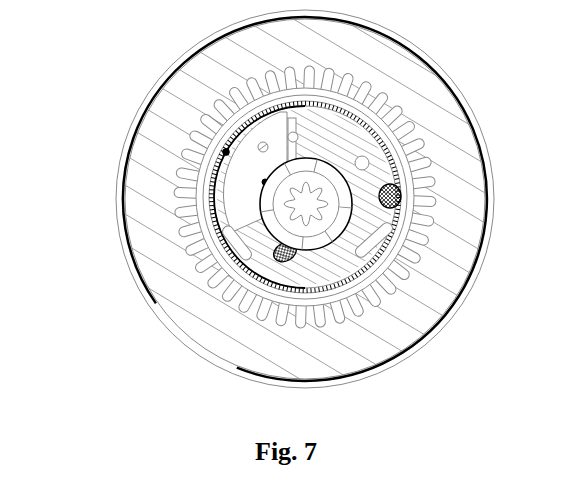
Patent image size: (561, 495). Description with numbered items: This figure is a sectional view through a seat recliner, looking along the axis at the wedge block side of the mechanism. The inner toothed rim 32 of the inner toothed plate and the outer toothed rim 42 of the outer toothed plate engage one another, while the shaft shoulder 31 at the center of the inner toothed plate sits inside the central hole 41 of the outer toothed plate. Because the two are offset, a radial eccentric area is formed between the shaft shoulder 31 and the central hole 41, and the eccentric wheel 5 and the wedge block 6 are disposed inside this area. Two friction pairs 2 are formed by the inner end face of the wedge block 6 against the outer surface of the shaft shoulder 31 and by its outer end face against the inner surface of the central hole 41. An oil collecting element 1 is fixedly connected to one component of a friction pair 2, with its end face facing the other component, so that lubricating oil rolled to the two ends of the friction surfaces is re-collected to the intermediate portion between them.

The oil collecting element 1 is at (394, 275).
The friction pair 2 is at (238, 175).
The eccentric wheel 5 is at (246, 216).
The wedge block 6 is at (142, 170).
The shaft shoulder 31 is at (220, 252).
The inner toothed rim 32 is at (223, 197).
The central hole 41 is at (198, 242).
The outer toothed rim 42 is at (280, 247).